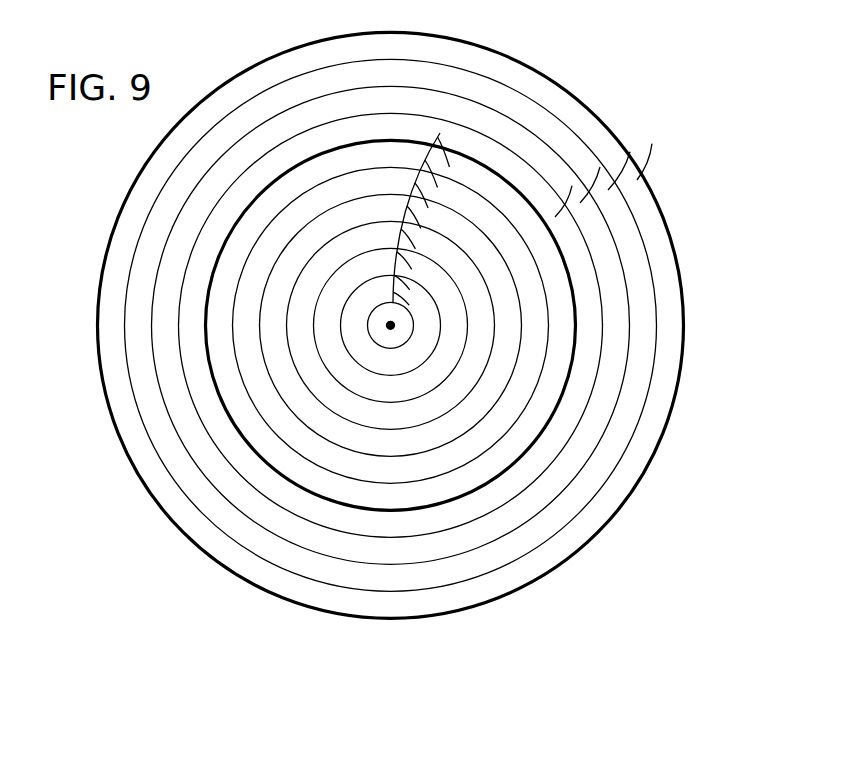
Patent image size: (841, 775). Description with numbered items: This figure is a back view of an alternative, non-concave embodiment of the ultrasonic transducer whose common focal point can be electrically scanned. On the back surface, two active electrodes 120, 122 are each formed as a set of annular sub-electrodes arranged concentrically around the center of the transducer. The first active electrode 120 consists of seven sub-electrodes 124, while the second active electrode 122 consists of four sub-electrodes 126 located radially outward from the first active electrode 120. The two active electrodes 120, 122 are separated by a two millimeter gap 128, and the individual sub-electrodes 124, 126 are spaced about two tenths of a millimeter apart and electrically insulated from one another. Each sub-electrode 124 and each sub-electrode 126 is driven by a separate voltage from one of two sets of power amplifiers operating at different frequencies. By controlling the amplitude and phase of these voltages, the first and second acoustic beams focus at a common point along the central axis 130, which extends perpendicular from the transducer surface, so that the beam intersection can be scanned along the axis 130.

The first active electrode 120 is at (537, 368).
The second active electrode 122 is at (575, 528).
The sub-electrodes 124 is at (440, 133).
The sub-electrodes 126 is at (527, 225).
The gap 128 is at (275, 176).
The central axis 130 is at (390, 325).